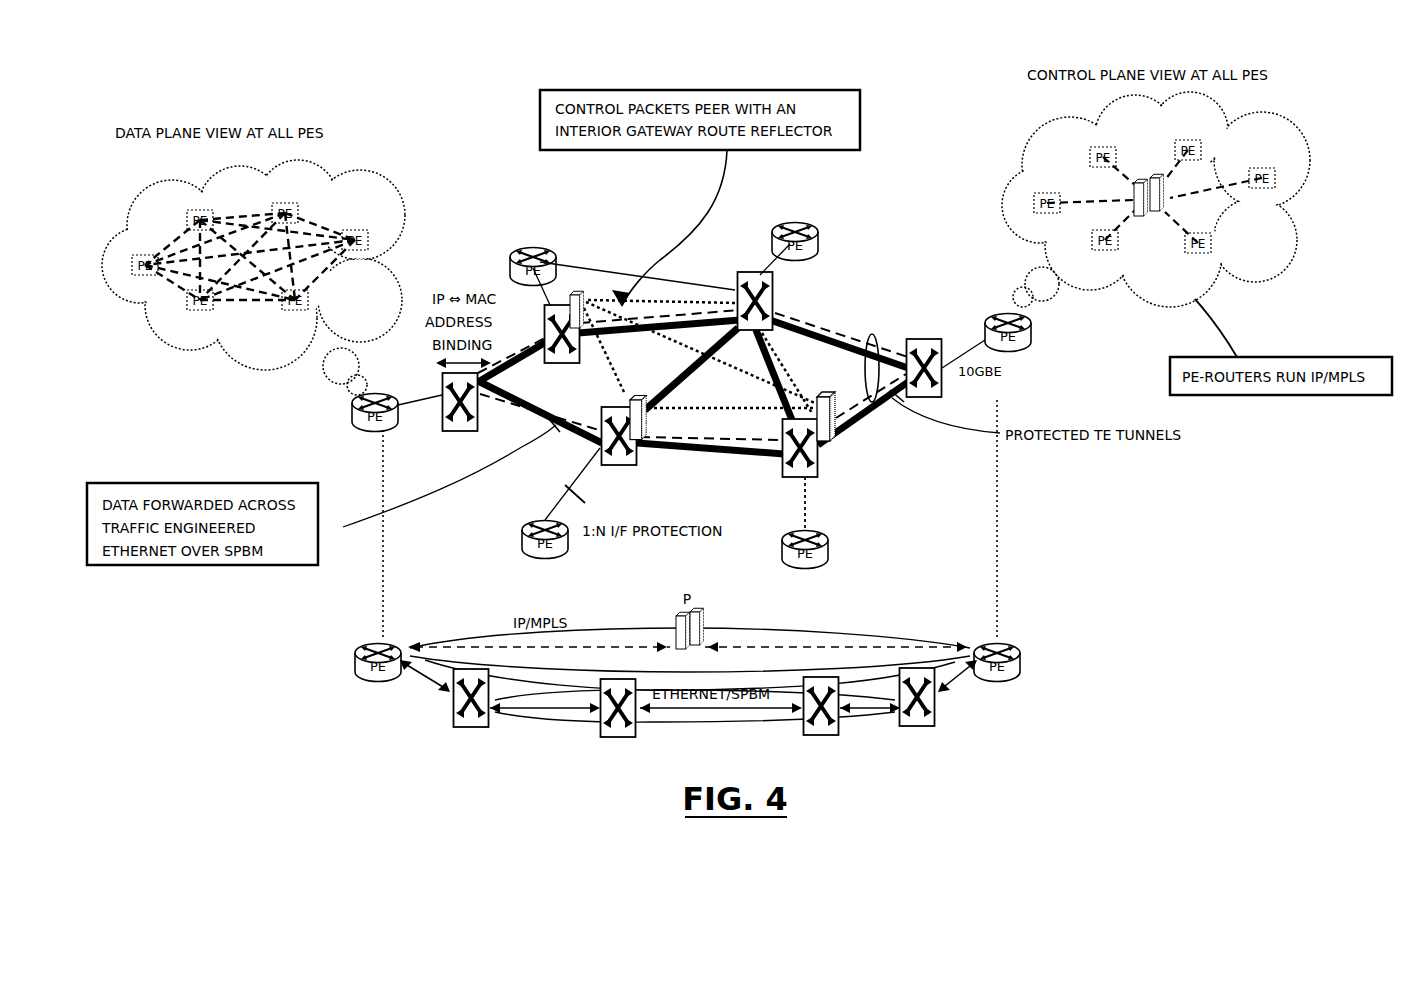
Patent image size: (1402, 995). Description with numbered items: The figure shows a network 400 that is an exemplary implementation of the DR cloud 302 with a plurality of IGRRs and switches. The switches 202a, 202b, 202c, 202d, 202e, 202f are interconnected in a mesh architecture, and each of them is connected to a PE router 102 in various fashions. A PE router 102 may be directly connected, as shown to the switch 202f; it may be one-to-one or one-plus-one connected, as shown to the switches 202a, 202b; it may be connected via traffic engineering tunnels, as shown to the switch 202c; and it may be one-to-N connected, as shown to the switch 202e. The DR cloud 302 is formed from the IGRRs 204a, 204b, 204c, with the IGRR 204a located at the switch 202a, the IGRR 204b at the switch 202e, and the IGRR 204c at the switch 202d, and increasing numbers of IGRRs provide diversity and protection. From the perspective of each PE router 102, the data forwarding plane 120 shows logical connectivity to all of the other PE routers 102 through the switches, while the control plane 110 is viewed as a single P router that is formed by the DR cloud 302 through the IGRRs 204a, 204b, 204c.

The network 400 is at (750, 43).
The PE router 102 is at (380, 393).
The control plane 110 is at (1226, 144).
The data forwarding plane 120 is at (347, 200).
The switch 202a is at (556, 363).
The switch 202b is at (772, 300).
The switch 202c is at (924, 339).
The switch 202d is at (790, 477).
The switch 202e is at (634, 465).
The switch 202f is at (460, 431).
The IGRR 204a is at (584, 292).
The IGRR 204b is at (640, 396).
The IGRR 204c is at (828, 441).
The DR cloud 302 is at (704, 395).